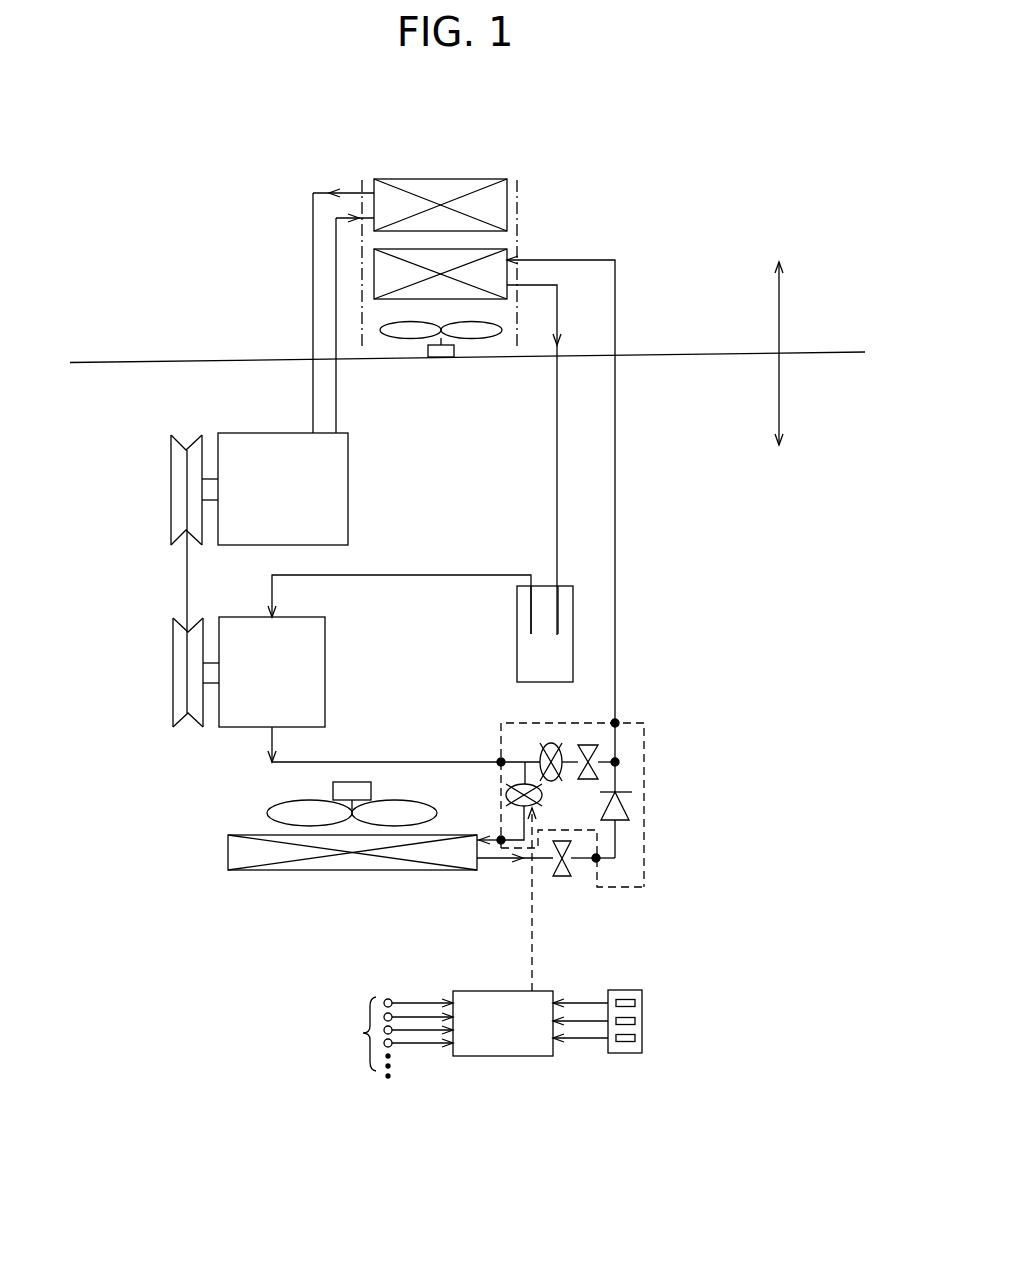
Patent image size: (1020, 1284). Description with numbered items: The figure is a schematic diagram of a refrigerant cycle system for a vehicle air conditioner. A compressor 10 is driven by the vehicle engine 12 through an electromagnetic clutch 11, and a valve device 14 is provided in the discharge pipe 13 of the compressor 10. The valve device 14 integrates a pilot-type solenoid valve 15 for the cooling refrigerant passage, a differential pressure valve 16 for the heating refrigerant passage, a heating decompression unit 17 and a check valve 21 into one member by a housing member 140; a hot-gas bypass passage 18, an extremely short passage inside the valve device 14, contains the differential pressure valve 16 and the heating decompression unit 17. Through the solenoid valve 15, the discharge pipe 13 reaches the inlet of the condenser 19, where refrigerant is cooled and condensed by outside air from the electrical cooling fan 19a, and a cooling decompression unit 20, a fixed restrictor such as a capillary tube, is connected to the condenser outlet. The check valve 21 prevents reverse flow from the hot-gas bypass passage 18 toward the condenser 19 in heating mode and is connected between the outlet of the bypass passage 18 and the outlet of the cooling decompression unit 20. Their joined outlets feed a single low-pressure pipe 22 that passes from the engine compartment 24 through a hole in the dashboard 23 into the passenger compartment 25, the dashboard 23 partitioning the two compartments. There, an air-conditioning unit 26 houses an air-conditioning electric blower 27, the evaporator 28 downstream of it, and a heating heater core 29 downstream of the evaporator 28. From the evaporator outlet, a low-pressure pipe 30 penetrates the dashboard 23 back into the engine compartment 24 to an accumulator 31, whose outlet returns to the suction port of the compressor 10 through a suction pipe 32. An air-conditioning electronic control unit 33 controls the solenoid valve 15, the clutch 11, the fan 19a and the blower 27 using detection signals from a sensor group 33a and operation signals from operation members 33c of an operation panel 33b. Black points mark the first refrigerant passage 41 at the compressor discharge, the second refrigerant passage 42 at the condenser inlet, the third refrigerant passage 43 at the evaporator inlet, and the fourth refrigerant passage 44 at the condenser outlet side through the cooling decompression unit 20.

The compressor 10 is at (233, 728).
The electromagnetic clutch 11 is at (173, 667).
The vehicle engine 12 is at (242, 432).
The discharge pipe 13 is at (399, 762).
The valve device 14 is at (650, 858).
The housing member 140 is at (622, 887).
The pilot-type solenoid valve 15 is at (545, 797).
The differential pressure valve 16 is at (556, 744).
The heating decompression unit 17 is at (598, 757).
The hot-gas bypass passage 18 is at (622, 761).
The condenser 19 is at (250, 868).
The electrical cooling fan 19a is at (268, 815).
The cooling decompression unit 20 is at (562, 877).
The check valve 21 is at (633, 805).
The low-pressure pipe 22 is at (616, 537).
The dashboard 23 is at (100, 362).
The engine compartment 24 is at (797, 415).
The passenger compartment 25 is at (792, 295).
The air-conditioning unit 26 is at (517, 201).
The air-conditioning electric blower 27 is at (494, 327).
The evaporator 28 is at (480, 250).
The heating heater core 29 is at (480, 183).
The low-pressure pipe 30 is at (558, 398).
The accumulator 31 is at (573, 618).
The suction pipe 32 is at (432, 575).
The air-conditioning electronic control unit 33 is at (470, 991).
The sensor group 33a is at (385, 1037).
The air-conditioning operation panel 33b is at (642, 1018).
The operation members 33c is at (625, 993).
The first refrigerant passage 41 is at (501, 762).
The second refrigerant passage 42 is at (498, 843).
The third refrigerant passage 43 is at (617, 723).
The fourth refrigerant passage 44 is at (596, 860).